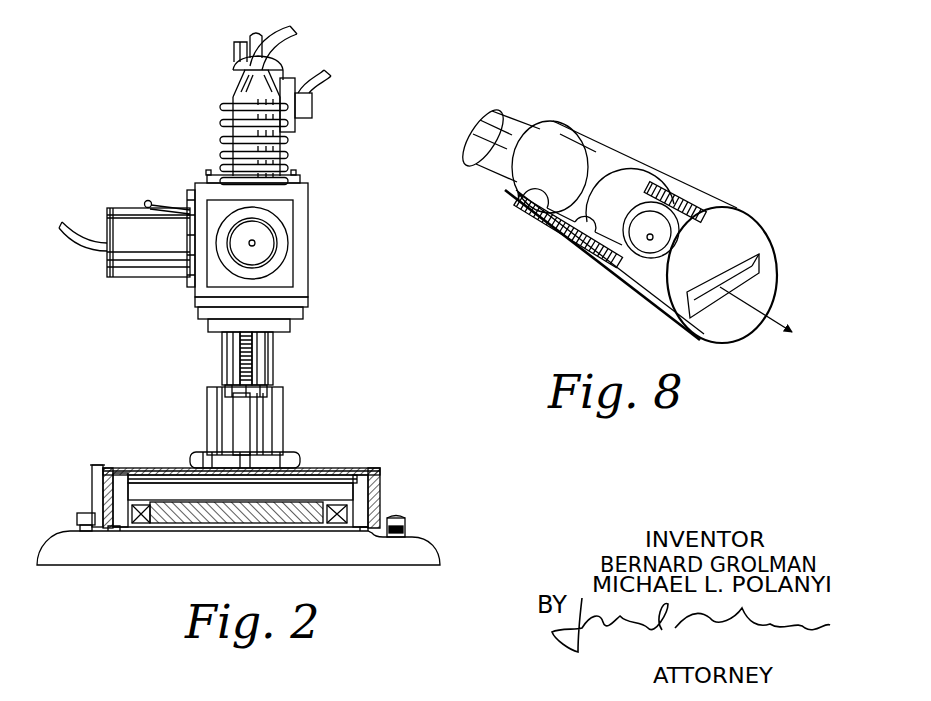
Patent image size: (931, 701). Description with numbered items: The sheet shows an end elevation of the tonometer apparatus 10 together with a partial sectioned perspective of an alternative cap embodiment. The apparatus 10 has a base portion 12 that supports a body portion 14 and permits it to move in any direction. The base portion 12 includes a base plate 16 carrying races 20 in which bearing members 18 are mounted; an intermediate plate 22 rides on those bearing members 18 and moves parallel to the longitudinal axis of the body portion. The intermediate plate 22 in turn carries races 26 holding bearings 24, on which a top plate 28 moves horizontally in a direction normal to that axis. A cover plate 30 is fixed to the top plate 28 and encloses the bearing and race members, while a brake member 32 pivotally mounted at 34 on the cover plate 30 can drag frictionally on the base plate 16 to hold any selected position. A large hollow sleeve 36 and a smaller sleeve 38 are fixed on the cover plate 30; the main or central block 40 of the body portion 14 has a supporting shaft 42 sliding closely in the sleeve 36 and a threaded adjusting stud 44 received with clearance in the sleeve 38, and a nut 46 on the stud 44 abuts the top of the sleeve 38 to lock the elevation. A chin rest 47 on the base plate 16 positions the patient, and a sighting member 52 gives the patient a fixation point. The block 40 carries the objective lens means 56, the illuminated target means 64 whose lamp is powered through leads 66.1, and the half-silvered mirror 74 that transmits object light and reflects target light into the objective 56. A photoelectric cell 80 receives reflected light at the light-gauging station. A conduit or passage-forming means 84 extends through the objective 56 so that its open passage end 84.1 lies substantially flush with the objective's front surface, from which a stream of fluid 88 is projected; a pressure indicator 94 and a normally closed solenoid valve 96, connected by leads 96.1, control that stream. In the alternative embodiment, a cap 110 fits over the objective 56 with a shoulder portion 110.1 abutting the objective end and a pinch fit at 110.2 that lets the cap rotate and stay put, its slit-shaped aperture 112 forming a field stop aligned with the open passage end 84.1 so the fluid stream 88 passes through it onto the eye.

In FIG. 2, the tonometer apparatus 10 is at (336, 321).
In FIG. 2, the base portion 12 is at (381, 471).
In FIG. 2, the body portion 14 is at (312, 205).
In FIG. 2, the base plate 16 is at (426, 551).
In FIG. 2, the bearing members 18 is at (148, 524).
In FIG. 2, the races 20 is at (122, 529).
In FIG. 2, the intermediate plate 22 is at (240, 522).
In FIG. 2, the bearings 24 is at (317, 478).
In FIG. 2, the races 26 is at (333, 497).
In FIG. 2, the top plate 28 is at (305, 468).
In FIG. 2, the cover plate 30 is at (142, 467).
In FIG. 2, the brake member 32 is at (96, 468).
In FIG. 2, the pivot mounting 34 is at (90, 483).
In FIG. 2, the hollow bushing or sleeve 36 is at (207, 416).
In FIG. 2, the hollow bushing or sleeve 38 is at (240, 437).
In FIG. 2, the main or central block 40 is at (308, 300).
In FIG. 2, the supporting shaft 42 is at (273, 355).
In FIG. 2, the threaded adjusting stud 44 is at (240, 358).
In FIG. 2, the nut 46 is at (273, 374).
In FIG. 2, the chin rest 47 is at (405, 518).
In FIG. 2, the sighting member 52 is at (150, 200).
In FIG. 2, the objective lens means 56 is at (287, 235).
In FIG. 8, the objective lens means 56 is at (590, 160).
In FIG. 2, the illuminated target means 64 is at (232, 88).
In FIG. 2, the leads 66.1 is at (291, 24).
In FIG. 2, the half-silvered mirror 74 is at (294, 269).
In FIG. 2, the photoelectric cell 80 is at (134, 204).
In FIG. 2, the conduit or passage-forming means 84 is at (257, 34).
In FIG. 2, the open passage end 84.1 is at (250, 246).
In FIG. 8, the open passage end 84.1 is at (652, 235).
In FIG. 8, the stream of fluid 88 is at (769, 322).
In FIG. 2, the pressure indicator 94 is at (234, 50).
In FIG. 2, the solenoid valve 96 is at (312, 108).
In FIG. 2, the leads 96.1 is at (323, 68).
In FIG. 8, the cap 110 is at (590, 262).
In FIG. 8, the shoulder portion 110.1 is at (558, 238).
In FIG. 8, the pinch fit 110.2 is at (513, 204).
In FIG. 8, the slit-shaped aperture 112 is at (748, 250).